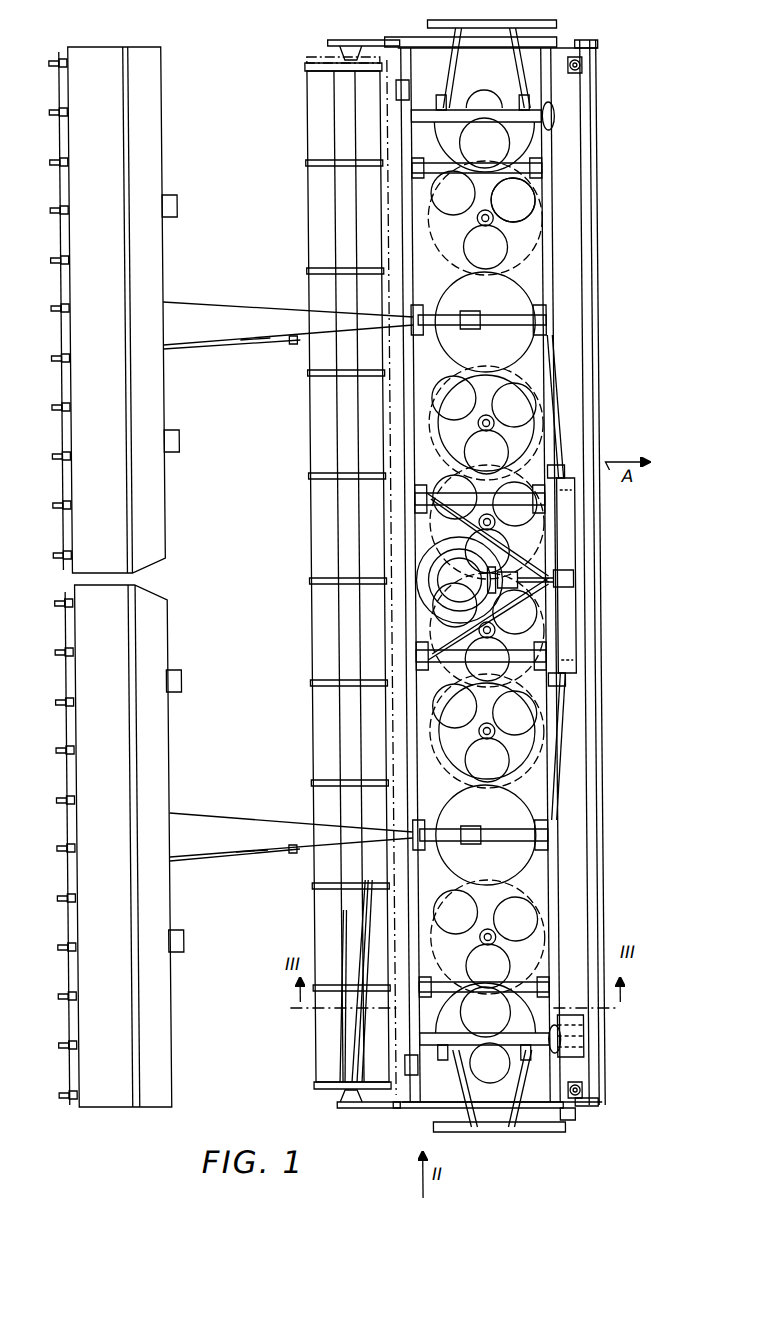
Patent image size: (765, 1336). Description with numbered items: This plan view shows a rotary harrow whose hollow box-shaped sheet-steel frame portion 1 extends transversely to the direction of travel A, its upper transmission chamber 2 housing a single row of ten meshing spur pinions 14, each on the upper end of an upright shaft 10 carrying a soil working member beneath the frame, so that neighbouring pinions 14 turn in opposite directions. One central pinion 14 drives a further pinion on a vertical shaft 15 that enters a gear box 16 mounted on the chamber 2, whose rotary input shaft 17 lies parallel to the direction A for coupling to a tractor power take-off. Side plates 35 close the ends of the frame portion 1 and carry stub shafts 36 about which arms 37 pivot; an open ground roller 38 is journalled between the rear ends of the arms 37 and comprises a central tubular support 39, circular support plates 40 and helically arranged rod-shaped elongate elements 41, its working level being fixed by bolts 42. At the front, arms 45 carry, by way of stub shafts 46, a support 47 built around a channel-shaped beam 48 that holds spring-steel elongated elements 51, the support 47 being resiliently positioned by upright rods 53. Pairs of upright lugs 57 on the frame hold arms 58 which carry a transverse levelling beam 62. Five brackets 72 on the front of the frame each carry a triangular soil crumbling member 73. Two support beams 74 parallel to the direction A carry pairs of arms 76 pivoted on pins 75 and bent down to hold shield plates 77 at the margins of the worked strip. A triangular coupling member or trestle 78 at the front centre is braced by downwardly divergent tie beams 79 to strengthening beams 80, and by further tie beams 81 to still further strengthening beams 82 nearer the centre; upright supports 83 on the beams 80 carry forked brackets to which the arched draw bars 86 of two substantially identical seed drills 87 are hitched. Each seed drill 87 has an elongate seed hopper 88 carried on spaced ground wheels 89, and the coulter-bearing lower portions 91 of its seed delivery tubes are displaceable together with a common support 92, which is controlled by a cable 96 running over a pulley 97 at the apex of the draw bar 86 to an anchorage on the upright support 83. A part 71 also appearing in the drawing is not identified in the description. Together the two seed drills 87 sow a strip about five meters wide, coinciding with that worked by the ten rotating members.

The hollow frame portion 1 is at (550, 240).
The upper transmission chamber 2 is at (426, 750).
The shaft 10 is at (469, 226).
The pinion 14 is at (406, 440).
The shaft 15 is at (422, 590).
The gear box 16 is at (438, 575).
The rotary input shaft 17 is at (518, 578).
The side plates 35 is at (402, 38).
The stub shafts 36 is at (554, 22).
The arms 37 is at (335, 40).
The open ground roller 38 is at (308, 205).
The central tubular support 39 is at (335, 520).
The support plates 40 is at (356, 580).
The elongate elements 41 is at (330, 1040).
The bolts 42 is at (354, 46).
The arms 45 is at (577, 44).
The stub shafts 46 is at (600, 42).
The support 47 is at (602, 182).
The beam 48 is at (598, 662).
The elongated elements 51 is at (580, 1042).
The upright rods 53 is at (568, 1118).
The upright lugs 57 is at (553, 170).
The arm 58 is at (496, 180).
The levelling beam 62 is at (422, 650).
The brush roller 71 is at (482, 100).
The brackets 72 is at (403, 100).
The soil crumbling member 73 is at (556, 132).
The support beams 74 is at (476, 1032).
The pins 75 is at (548, 104).
The arms 76 is at (452, 25).
The shield plate 77 is at (513, 1128).
The coupling member or trestle 78 is at (507, 22).
The tie beams 79 is at (556, 410).
The strengthening beams 80 is at (543, 300).
The further tie beams 81 is at (558, 588).
The still further strengthening beams 82 is at (560, 470).
The upright support 83 is at (499, 312).
The arched draw bar 86 is at (238, 300).
The seed drill 87 is at (174, 135).
The seed hopper 88 is at (163, 300).
The ground wheels 89 is at (178, 208).
The lower portions 91 is at (52, 210).
The common support 92 is at (60, 456).
The cable 96 is at (245, 340).
The pulley 97 is at (285, 343).